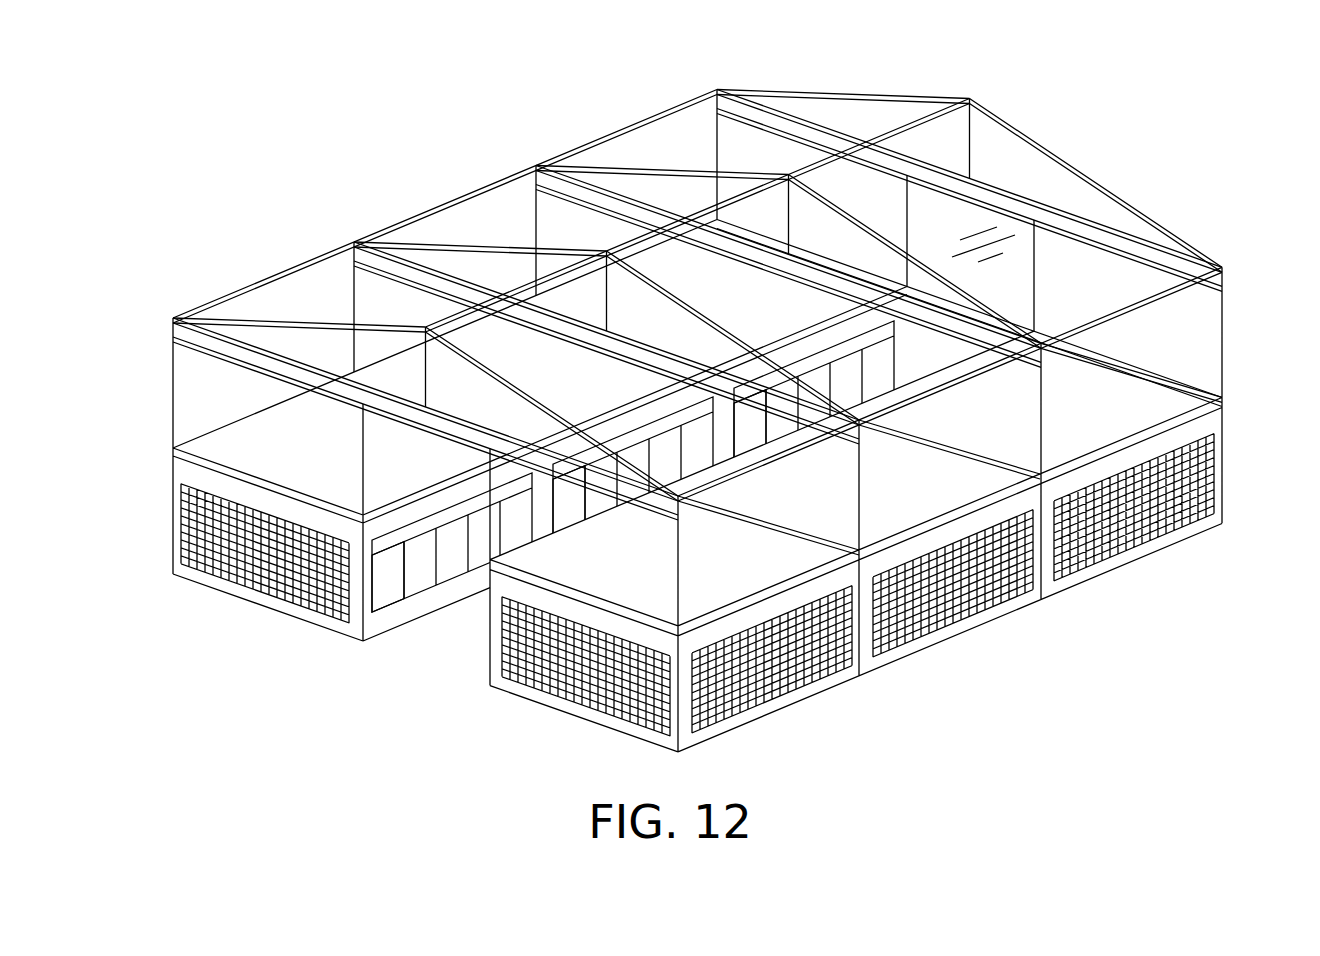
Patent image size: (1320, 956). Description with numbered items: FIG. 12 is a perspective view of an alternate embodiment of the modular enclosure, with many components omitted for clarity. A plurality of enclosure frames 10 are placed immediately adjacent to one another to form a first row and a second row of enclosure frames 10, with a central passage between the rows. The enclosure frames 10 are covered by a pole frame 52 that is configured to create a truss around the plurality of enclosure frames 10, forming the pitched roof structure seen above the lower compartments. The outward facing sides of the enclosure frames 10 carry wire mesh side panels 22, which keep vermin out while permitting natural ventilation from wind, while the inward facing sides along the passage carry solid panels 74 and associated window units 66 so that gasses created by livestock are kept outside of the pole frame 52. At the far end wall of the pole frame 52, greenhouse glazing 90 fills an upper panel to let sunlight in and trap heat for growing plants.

The enclosure frame 10 is at (694, 486).
The side panel 22 is at (276, 596).
The pole frame 52 is at (1108, 185).
The window unit 66 is at (452, 527).
The solid paneling 74 is at (395, 602).
The greenhouse glazing 90 is at (975, 217).